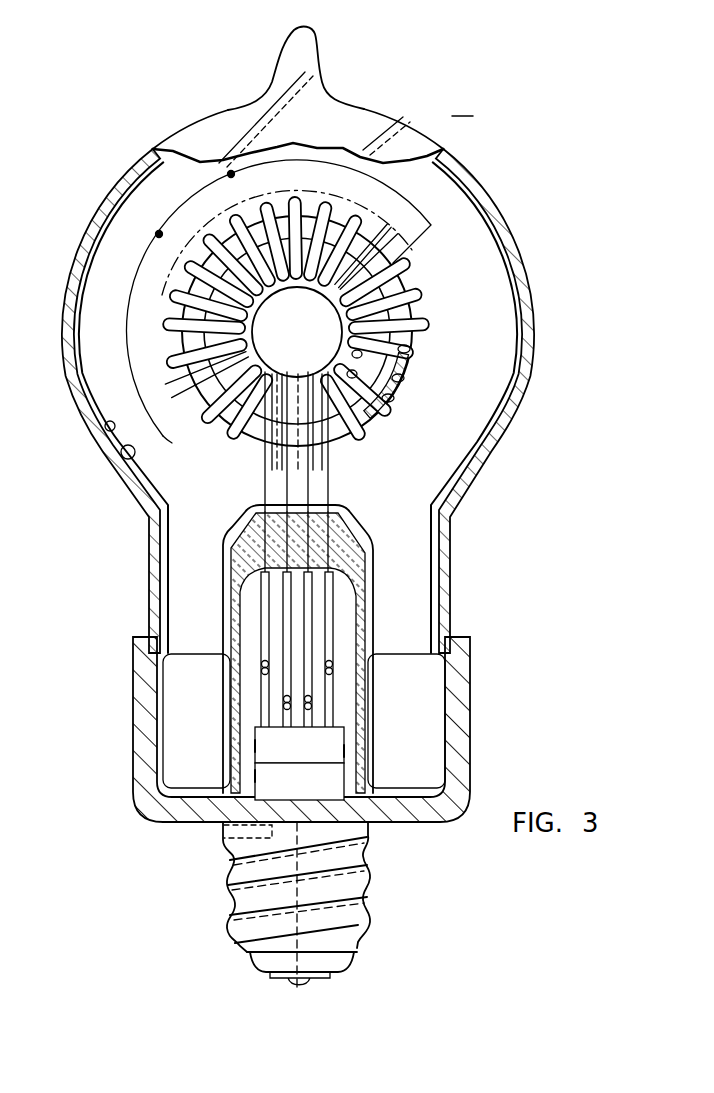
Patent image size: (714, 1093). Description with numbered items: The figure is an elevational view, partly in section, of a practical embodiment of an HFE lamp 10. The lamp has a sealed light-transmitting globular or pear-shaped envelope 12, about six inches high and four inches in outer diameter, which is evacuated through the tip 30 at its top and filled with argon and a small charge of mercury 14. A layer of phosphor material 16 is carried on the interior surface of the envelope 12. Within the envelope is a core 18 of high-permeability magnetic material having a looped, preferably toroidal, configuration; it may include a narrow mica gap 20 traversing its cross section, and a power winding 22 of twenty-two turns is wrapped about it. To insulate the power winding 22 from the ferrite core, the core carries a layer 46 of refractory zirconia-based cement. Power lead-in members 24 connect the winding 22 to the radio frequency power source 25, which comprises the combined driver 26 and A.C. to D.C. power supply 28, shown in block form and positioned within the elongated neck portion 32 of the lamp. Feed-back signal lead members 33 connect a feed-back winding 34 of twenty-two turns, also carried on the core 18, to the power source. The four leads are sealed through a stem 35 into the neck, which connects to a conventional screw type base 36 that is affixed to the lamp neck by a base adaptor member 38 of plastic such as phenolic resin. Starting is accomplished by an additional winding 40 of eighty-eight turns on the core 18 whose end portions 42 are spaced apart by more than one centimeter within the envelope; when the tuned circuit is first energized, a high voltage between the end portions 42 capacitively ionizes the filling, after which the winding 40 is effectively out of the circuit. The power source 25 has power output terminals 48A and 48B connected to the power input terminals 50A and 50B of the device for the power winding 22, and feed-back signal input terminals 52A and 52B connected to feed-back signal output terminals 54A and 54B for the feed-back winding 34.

The lamp 10 is at (462, 104).
The envelope 12 is at (514, 240).
The mercury 14 is at (118, 450).
The phosphor material 16 is at (104, 430).
The core 18 is at (414, 310).
The gap 20 is at (420, 345).
The power winding 22 is at (419, 258).
The power lead-in members 24 is at (302, 494).
The radio frequency power source 25 is at (346, 752).
The driver 26 is at (258, 746).
The A.C. to D.C. power supply 28 is at (258, 776).
The tip 30 is at (321, 56).
The neck portion 32 is at (380, 656).
The feed-back signal lead members 33 is at (320, 590).
The feed-back winding 34 is at (334, 366).
The stem 35 is at (354, 562).
The screw type base 36 is at (376, 862).
The base adaptor member 38 is at (471, 700).
The additional winding 40 is at (178, 437).
The end portions 42 is at (229, 175).
The layer 46 is at (394, 399).
The power output terminal 48A is at (281, 760).
The power output terminal 48B is at (296, 729).
The power input terminal 50A is at (284, 702).
The power input terminal 50B is at (312, 702).
The feed-back signal input terminal 52A is at (262, 670).
The feed-back signal input terminal 52B is at (333, 671).
The feed-back signal output terminal 54A is at (262, 663).
The feed-back signal output terminal 54B is at (331, 662).